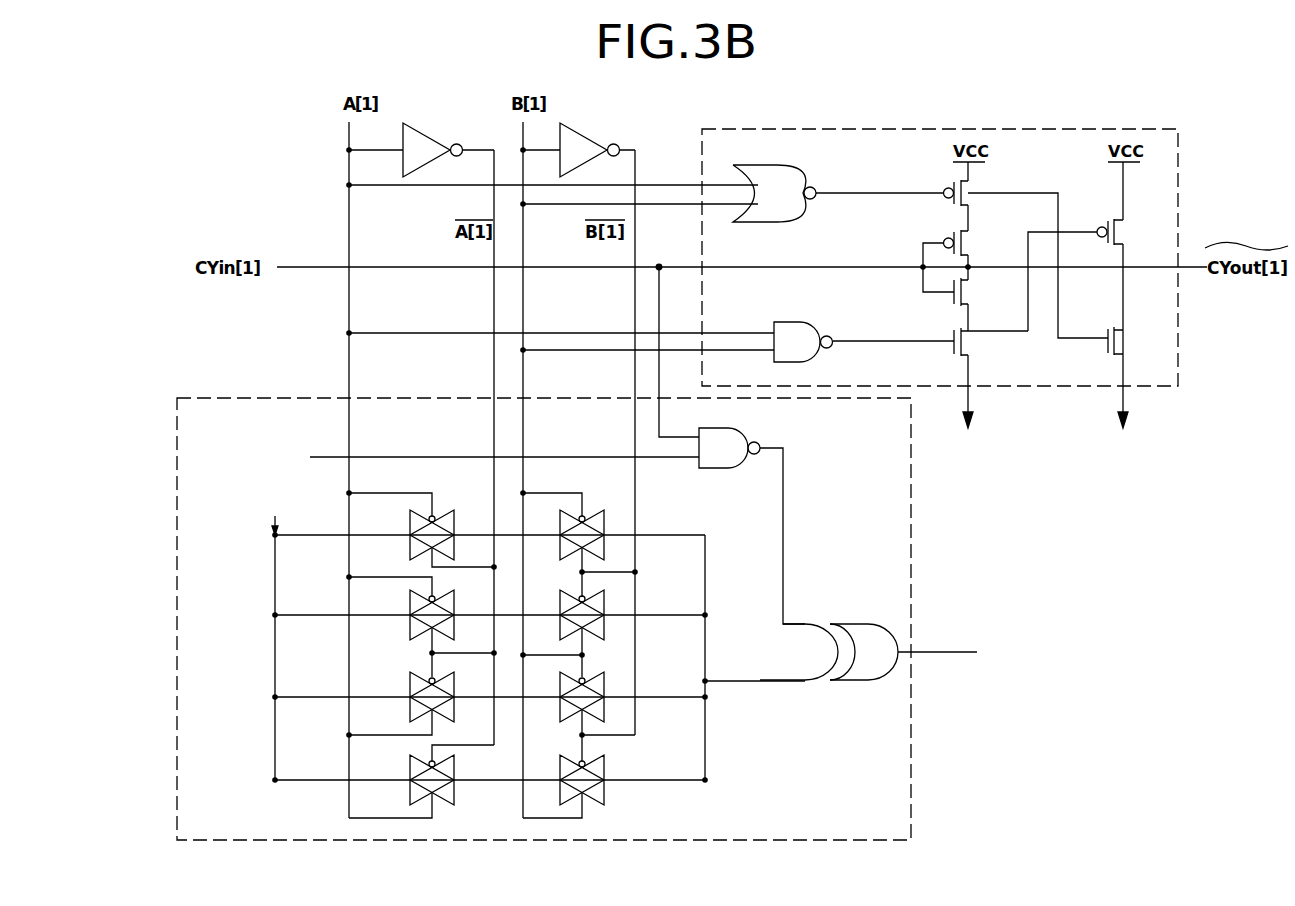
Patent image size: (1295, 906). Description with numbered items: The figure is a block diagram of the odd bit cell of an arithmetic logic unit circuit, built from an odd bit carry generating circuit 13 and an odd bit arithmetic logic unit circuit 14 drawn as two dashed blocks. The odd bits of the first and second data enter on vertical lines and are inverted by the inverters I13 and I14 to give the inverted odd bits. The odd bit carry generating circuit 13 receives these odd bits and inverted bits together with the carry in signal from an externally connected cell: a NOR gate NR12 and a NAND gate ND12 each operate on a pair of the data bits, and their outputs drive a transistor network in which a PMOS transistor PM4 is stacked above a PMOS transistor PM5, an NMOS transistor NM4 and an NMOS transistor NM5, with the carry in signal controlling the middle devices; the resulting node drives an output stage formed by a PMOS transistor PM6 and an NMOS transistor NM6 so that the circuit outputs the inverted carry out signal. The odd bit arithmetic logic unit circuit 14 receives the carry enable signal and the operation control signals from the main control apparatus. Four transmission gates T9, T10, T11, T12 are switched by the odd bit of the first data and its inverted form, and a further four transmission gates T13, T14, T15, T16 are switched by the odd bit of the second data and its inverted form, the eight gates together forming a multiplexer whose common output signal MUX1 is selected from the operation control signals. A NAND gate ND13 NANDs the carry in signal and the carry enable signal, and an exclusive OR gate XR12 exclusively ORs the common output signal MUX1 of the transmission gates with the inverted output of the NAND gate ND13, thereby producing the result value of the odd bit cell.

The odd bit carry generating circuit 13 is at (893, 128).
The odd bit arithmetic logic unit circuit 14 is at (911, 555).
The inverter I13 is at (421, 150).
The inverter I14 is at (579, 150).
The NOR gate NR12 is at (838, 193).
The NAND gate ND12 is at (864, 342).
The NAND gate ND13 is at (752, 526).
The PMOS transistor PM4 is at (980, 202).
The PMOS transistor PM5 is at (969, 261).
The PMOS transistor PM6 is at (1134, 286).
The NMOS transistor NM4 is at (986, 304).
The NMOS transistor NM5 is at (991, 378).
The NMOS transistor NM6 is at (1140, 377).
The transmission gate T9 is at (421, 525).
The transmission gate T10 is at (423, 623).
The transmission gate T11 is at (423, 699).
The transmission gate T12 is at (423, 772).
The transmission gate T13 is at (580, 538).
The transmission gate T14 is at (580, 626).
The transmission gate T15 is at (599, 708).
The transmission gate T16 is at (585, 780).
The exclusive OR gate XR12 is at (868, 652).
The common output signal of the transmission gates MUX1 is at (755, 696).